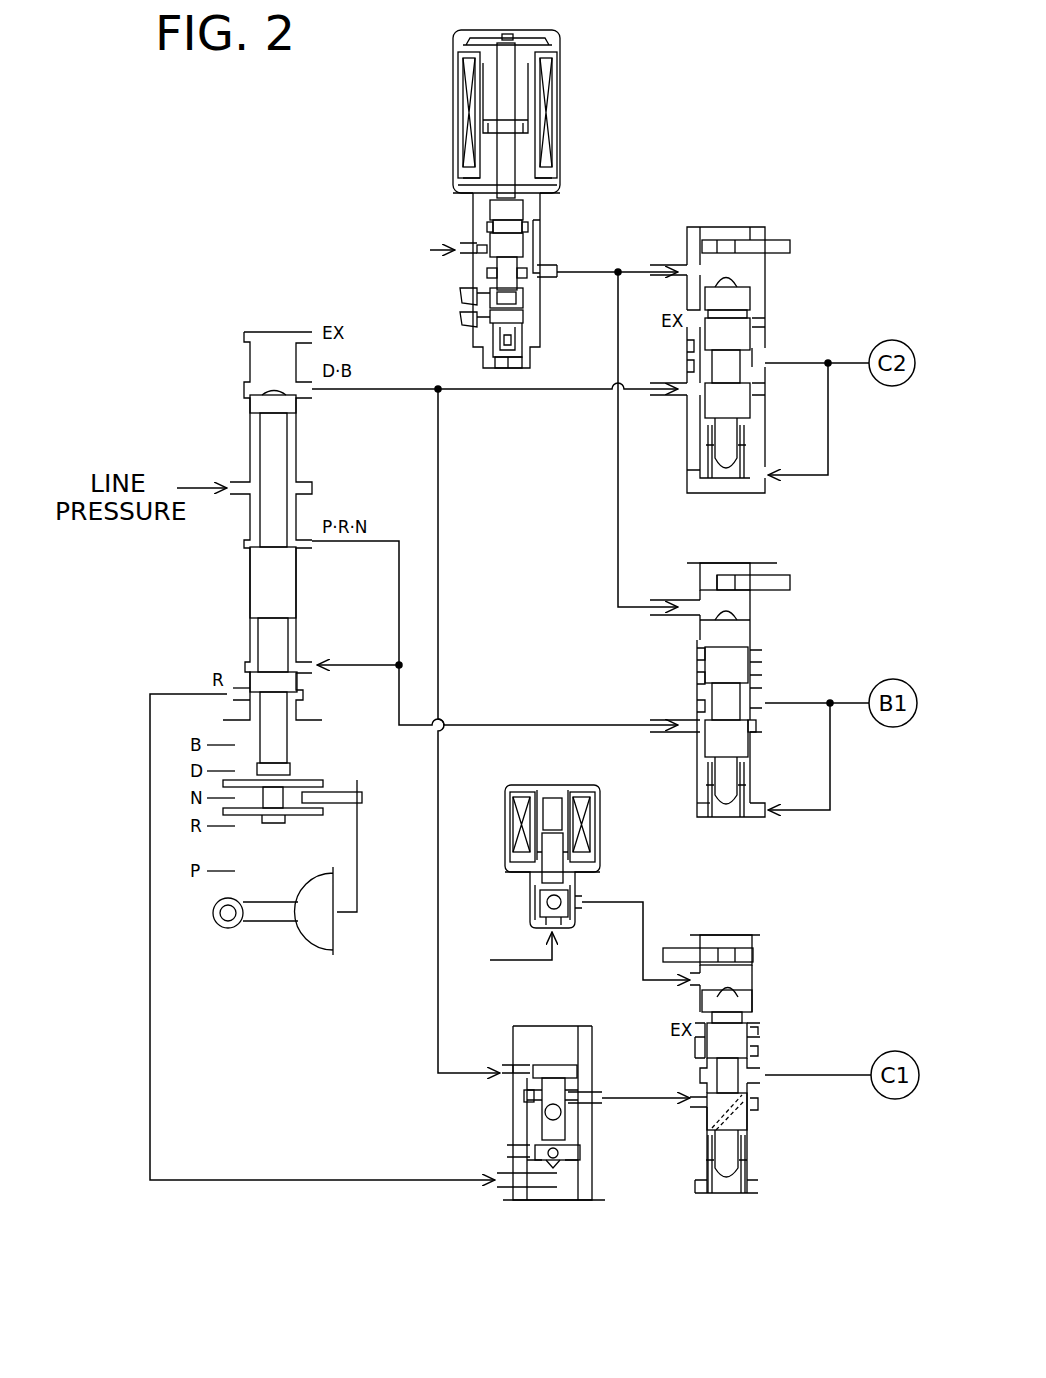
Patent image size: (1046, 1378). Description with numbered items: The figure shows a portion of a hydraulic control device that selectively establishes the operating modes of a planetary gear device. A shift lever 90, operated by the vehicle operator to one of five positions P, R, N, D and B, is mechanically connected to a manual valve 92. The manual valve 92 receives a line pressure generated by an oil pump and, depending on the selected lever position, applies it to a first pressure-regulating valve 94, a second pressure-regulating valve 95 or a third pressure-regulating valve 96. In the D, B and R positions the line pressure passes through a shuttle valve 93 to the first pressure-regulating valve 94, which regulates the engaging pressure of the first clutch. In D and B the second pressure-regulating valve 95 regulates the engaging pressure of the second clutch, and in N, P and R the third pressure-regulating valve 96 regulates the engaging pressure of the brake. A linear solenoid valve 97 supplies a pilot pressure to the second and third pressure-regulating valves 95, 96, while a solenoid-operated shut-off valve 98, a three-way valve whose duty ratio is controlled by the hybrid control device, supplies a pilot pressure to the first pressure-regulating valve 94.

The shift lever 90 is at (277, 925).
The manual valve 92 is at (315, 318).
The shuttle valve 93 is at (530, 1012).
The first pressure-regulating valve 94 is at (800, 958).
The second pressure-regulating valve 95 is at (800, 213).
The third pressure-regulating valve 96 is at (800, 545).
The linear solenoid valve 97 is at (600, 80).
The solenoid-operated shut-off valve 98 is at (532, 772).